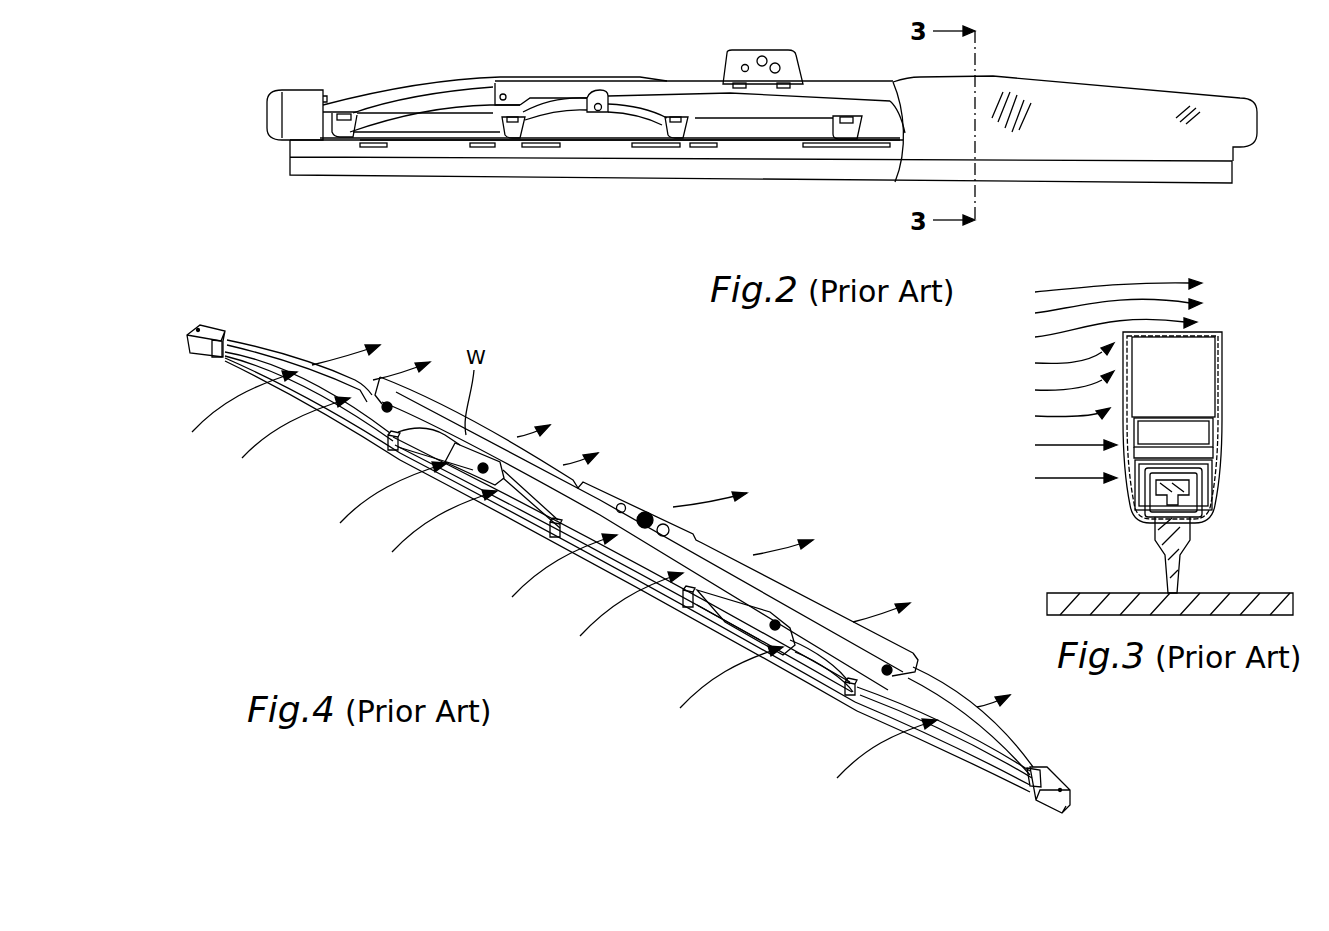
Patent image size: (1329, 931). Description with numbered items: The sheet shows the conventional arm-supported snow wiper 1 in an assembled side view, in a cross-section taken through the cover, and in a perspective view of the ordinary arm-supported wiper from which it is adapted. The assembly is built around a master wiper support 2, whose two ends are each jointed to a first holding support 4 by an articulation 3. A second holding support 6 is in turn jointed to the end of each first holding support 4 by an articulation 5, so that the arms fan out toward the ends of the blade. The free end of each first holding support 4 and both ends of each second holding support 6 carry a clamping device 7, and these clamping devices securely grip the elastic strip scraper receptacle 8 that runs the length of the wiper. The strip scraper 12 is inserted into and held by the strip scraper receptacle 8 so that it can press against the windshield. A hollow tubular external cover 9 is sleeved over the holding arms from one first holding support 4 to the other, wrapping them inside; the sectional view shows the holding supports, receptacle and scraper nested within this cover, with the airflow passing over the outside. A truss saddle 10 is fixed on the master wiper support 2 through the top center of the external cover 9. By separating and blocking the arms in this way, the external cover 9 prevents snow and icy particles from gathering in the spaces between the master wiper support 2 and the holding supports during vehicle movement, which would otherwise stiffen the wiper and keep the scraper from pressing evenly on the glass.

In FIG. 2, the conventional arm-supported snow wiper 1 is at (1186, 204).
In FIG. 4, the conventional arm-supported snow wiper 1 is at (628, 569).
In FIG. 2, the master wiper support 2 is at (635, 87).
In FIG. 3, the master wiper support 2 is at (1218, 396).
In FIG. 4, the master wiper support 2 is at (646, 533).
In FIG. 2, the articulation 3 is at (504, 94).
In FIG. 2, the first holding support 4 is at (423, 100).
In FIG. 3, the first holding support 4 is at (1222, 358).
In FIG. 4, the first holding support 4 is at (629, 559).
In FIG. 2, the articulation 5 is at (598, 112).
In FIG. 2, the second holding support 6 is at (627, 117).
In FIG. 3, the second holding support 6 is at (1222, 425).
In FIG. 4, the second holding support 6 is at (625, 560).
In FIG. 2, the clamping device 7 is at (517, 135).
In FIG. 3, the clamping device 7 is at (1212, 465).
In FIG. 4, the clamping device 7 is at (622, 563).
In FIG. 2, the elastic strip scraper receptacle 8 is at (443, 132).
In FIG. 3, the elastic strip scraper receptacle 8 is at (1205, 500).
In FIG. 2, the hollow tubular external cover 9 is at (1115, 95).
In FIG. 3, the hollow tubular external cover 9 is at (1222, 339).
In FIG. 2, the truss saddle 10 is at (737, 58).
In FIG. 4, the truss saddle 10 is at (643, 520).
In FIG. 2, the strip scraper 12 is at (355, 170).
In FIG. 3, the strip scraper 12 is at (1180, 556).
In FIG. 4, the strip scraper 12 is at (627, 575).